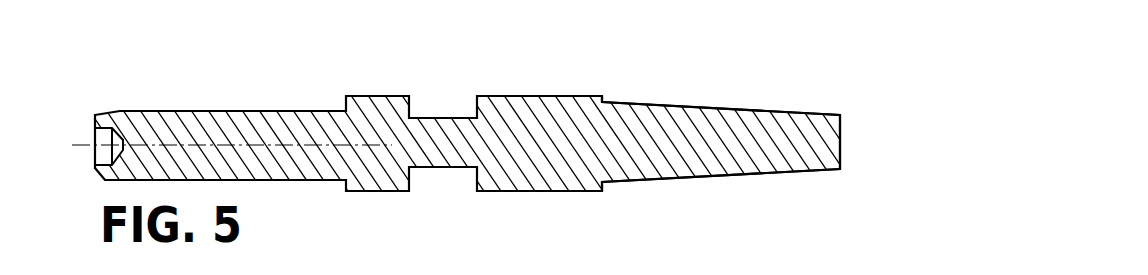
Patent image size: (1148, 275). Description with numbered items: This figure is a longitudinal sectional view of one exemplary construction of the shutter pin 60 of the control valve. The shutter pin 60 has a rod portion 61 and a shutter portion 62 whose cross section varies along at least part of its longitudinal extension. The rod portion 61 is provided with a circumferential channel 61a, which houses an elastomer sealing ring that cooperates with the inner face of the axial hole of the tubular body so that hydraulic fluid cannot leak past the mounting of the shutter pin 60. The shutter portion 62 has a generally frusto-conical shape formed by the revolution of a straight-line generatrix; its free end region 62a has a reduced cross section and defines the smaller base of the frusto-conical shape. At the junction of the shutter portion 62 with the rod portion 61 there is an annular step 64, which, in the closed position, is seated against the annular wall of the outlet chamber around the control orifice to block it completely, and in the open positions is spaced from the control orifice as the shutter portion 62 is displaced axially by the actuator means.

The shutter pin 60 is at (205, 106).
The rod portion 61 is at (527, 158).
The circumferential channel 61a is at (447, 118).
The shutter portion 62 is at (690, 132).
The free end region 62a is at (842, 145).
The annular step 64 is at (607, 95).